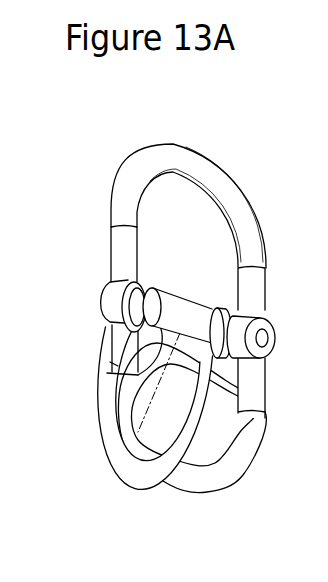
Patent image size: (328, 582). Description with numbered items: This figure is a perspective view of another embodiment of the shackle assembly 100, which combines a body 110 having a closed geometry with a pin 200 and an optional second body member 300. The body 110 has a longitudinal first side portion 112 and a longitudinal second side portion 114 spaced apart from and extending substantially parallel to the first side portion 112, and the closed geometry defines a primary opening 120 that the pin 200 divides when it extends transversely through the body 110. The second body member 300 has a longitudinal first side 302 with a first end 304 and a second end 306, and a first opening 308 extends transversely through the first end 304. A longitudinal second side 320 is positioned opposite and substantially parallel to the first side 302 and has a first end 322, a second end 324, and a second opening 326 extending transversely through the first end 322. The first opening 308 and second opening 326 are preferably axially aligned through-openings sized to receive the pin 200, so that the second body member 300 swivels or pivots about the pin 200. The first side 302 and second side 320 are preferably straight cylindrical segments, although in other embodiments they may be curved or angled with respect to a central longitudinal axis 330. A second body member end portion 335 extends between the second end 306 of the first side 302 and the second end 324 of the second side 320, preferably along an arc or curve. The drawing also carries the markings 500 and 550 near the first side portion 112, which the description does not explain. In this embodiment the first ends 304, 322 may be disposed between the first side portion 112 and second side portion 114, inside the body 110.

The shackle assembly 100 is at (207, 116).
The body 110 is at (228, 187).
The first side portion 112 is at (117, 240).
The second side portion 114 is at (247, 282).
The primary opening 120 is at (320, 255).
The pin 200 is at (202, 328).
The second body member 300 is at (157, 483).
The first side 302 is at (120, 348).
The first end 304 is at (130, 312).
The second end 306 is at (110, 362).
The first opening 308 is at (107, 373).
The second side 320 is at (210, 382).
The first end 322 is at (249, 364).
The second end 324 is at (247, 467).
The second opening 326 is at (220, 310).
The central longitudinal axis 330 is at (117, 489).
The second body member end portion 335 is at (107, 447).
The direction 500 is at (101, 273).
The direction 550 is at (93, 281).